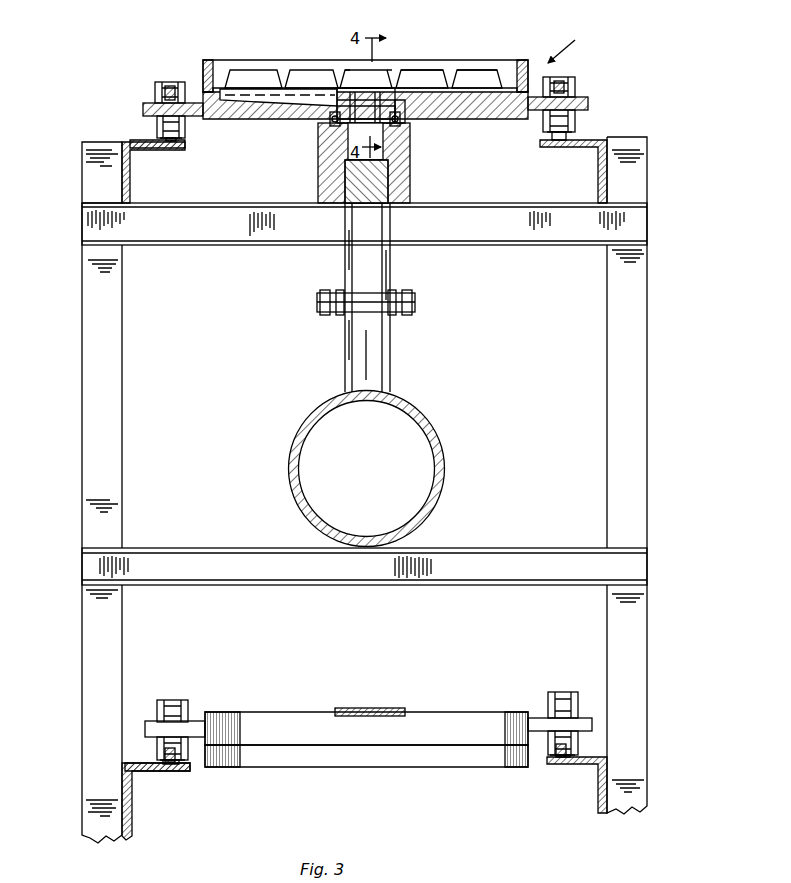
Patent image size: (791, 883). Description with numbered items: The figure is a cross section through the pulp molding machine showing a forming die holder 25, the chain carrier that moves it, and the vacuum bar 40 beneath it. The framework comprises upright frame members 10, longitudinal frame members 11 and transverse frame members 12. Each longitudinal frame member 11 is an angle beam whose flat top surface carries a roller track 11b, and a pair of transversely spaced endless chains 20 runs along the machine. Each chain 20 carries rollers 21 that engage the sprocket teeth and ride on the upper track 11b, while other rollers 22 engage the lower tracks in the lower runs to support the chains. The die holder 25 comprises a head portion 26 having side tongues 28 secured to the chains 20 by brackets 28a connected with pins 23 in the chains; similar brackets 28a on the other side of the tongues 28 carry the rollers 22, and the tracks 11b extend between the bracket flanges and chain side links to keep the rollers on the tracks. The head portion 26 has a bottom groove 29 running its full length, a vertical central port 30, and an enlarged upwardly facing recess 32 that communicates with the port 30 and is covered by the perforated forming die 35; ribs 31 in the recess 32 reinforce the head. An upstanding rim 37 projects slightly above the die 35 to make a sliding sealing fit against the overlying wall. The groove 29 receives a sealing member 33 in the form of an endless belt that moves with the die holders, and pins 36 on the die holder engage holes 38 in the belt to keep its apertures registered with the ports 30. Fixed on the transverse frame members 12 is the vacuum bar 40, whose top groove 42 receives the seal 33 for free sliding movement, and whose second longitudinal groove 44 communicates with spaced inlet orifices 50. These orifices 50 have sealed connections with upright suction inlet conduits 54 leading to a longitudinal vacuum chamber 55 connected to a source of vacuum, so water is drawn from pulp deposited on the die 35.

The upright frame members 10 is at (82, 432).
The longitudinal frame members 11 is at (128, 168).
The roller tracks 11b is at (548, 138).
The transverse frame members 12 is at (188, 245).
The endless chain 20 is at (158, 134).
The rollers 21 is at (170, 148).
The rollers 22 is at (166, 86).
The pins 23 is at (152, 92).
The forming die holders 25 is at (571, 40).
The head portion 26 is at (474, 119).
The side tongues 28 is at (143, 110).
The brackets 28a is at (160, 84).
The bottom groove 29 is at (400, 119).
The vertical central port 30 is at (342, 128).
The ribs 31 is at (378, 92).
The recess 32 is at (428, 88).
The sealing member 33 is at (337, 117).
The forming die member 35 is at (305, 70).
The pins 36 is at (350, 88).
The upstanding rim 37 is at (207, 60).
The holes 38 is at (401, 126).
The vacuum bar 40 is at (318, 180).
The top groove 42 is at (333, 121).
The second longitudinal groove 44 is at (385, 160).
The inlet orifices 50 is at (392, 206).
The suction inlet conduits 54 is at (390, 355).
The vacuum chamber 55 is at (438, 418).